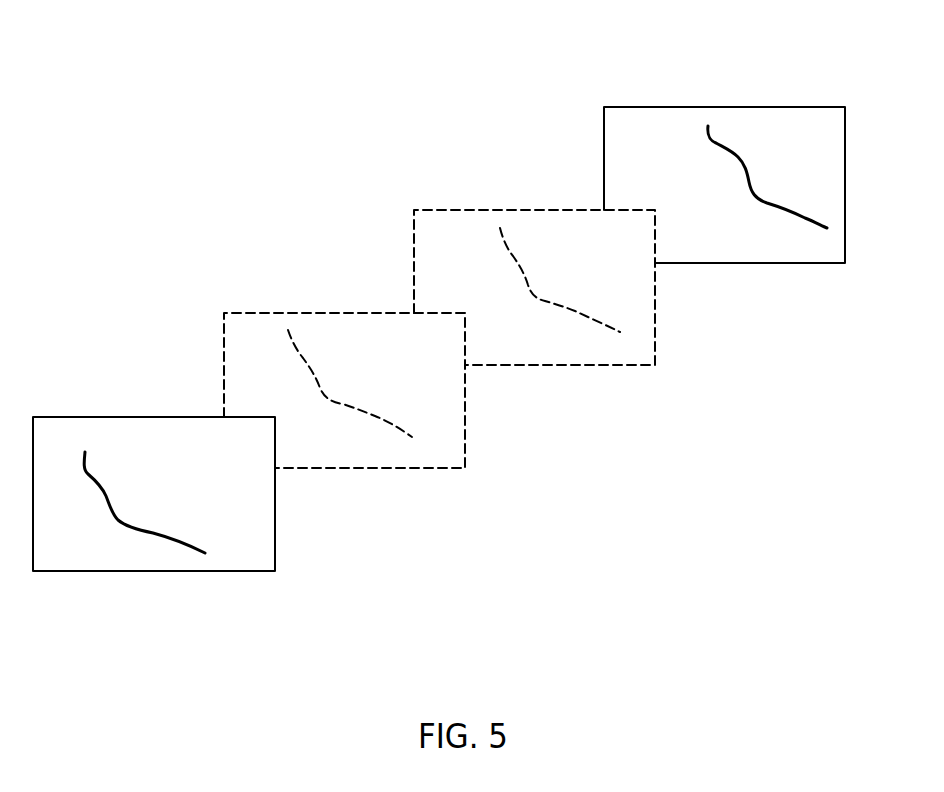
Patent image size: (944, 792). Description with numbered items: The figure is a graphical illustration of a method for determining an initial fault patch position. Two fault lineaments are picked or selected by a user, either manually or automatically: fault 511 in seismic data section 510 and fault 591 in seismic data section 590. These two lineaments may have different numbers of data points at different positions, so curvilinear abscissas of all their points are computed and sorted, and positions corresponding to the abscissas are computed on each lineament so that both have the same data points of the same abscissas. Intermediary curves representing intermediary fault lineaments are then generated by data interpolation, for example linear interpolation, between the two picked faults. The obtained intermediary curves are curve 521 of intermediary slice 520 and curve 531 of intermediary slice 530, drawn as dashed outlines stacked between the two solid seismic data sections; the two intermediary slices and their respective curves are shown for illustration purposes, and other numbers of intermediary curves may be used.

The seismic data section 510 is at (258, 571).
The fault 511 is at (87, 469).
The intermediary slice 520 is at (430, 468).
The curve 521 is at (296, 348).
The intermediary slice 530 is at (623, 365).
The curve 531 is at (508, 248).
The seismic data section 590 is at (777, 263).
The fault 591 is at (717, 141).